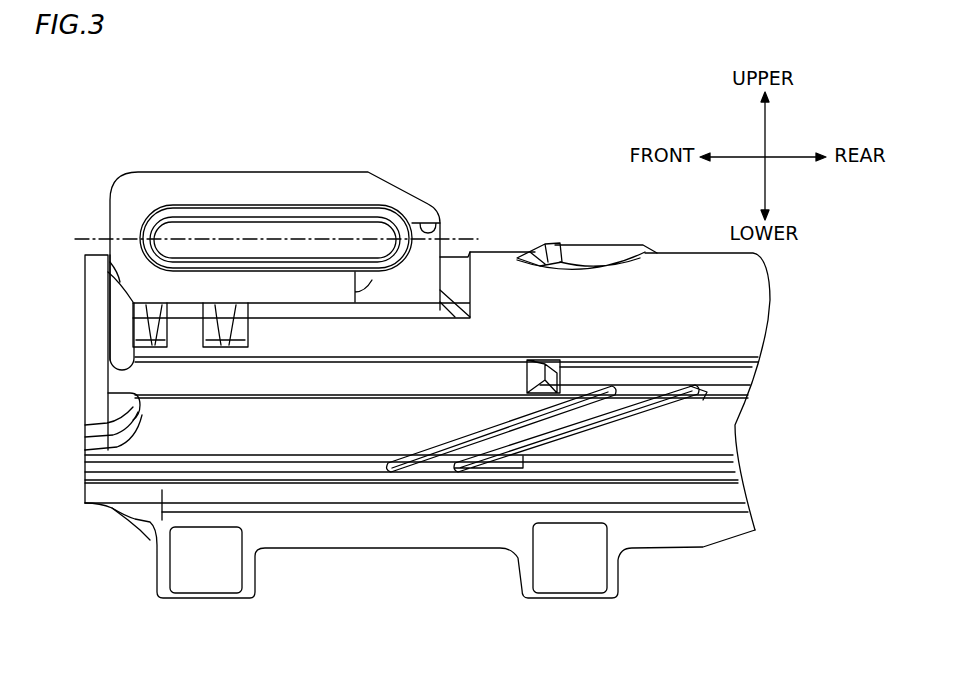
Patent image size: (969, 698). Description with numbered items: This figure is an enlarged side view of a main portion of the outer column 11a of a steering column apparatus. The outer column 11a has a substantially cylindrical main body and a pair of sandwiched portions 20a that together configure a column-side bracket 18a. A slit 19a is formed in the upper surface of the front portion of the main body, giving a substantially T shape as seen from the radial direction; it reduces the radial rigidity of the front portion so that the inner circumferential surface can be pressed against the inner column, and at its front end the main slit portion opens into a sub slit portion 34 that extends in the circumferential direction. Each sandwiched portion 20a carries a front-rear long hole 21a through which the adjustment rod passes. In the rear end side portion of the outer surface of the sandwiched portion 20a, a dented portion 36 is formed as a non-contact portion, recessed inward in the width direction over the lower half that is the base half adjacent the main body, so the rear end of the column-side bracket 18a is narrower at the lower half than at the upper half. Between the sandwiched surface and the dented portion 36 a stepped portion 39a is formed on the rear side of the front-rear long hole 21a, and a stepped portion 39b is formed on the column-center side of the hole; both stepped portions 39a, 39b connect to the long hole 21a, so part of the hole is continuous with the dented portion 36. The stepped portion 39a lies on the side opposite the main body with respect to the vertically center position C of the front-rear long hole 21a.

The outer column 11a is at (373, 566).
The column-side bracket 18a is at (418, 168).
The slit 19a is at (120, 281).
The sandwiched portion 20a is at (323, 186).
The front-rear long hole 21a is at (236, 230).
The sub slit portion 34 is at (120, 356).
The dented portion 36 is at (443, 242).
The stepped portion 39a is at (441, 224).
The stepped portion 39b is at (355, 295).
The vertically center position C is at (93, 237).